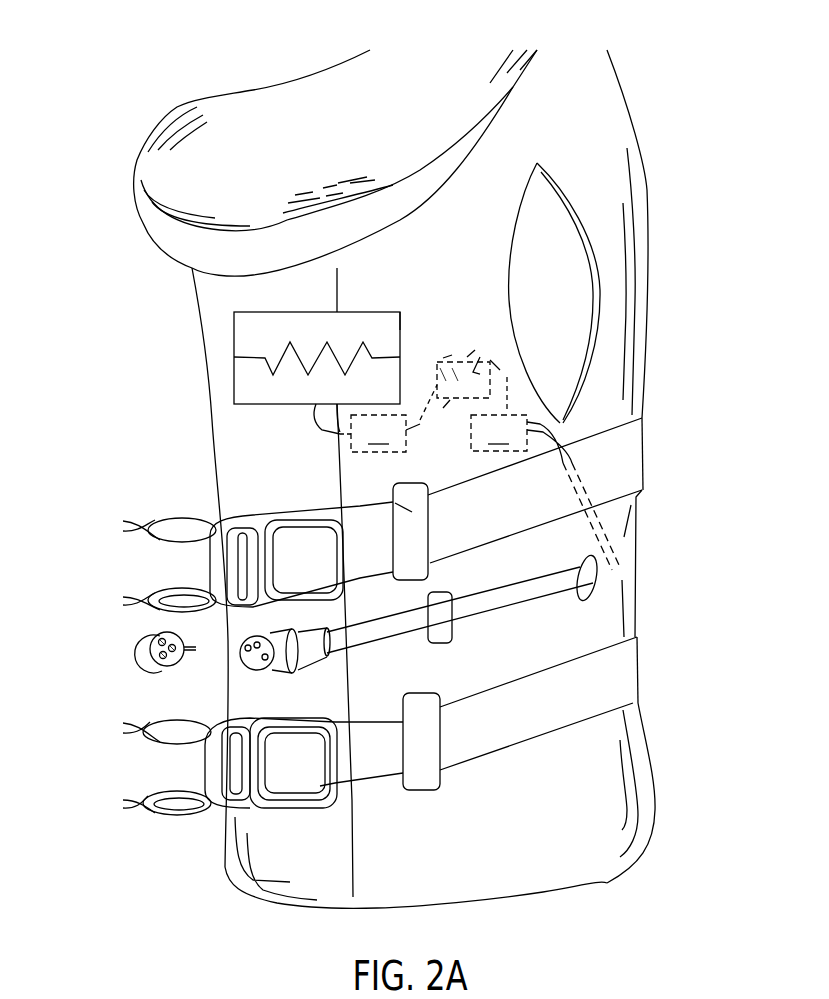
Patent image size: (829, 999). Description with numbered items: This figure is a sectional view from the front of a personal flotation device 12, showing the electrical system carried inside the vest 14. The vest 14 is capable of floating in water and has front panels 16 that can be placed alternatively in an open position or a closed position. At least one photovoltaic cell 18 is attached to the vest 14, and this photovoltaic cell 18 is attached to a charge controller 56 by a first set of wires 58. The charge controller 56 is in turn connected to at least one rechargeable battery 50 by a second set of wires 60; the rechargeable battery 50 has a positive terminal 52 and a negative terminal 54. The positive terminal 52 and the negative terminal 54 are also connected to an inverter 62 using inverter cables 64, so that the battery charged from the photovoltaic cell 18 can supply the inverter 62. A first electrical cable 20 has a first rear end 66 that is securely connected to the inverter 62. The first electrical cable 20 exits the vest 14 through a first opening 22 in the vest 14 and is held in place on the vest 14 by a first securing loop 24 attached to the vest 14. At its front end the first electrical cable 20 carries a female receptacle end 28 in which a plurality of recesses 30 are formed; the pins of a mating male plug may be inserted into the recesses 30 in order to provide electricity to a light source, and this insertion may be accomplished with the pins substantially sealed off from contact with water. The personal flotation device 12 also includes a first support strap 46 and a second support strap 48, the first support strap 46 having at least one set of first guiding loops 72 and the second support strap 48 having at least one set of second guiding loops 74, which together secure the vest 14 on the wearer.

The personal flotation device 12 is at (116, 60).
The vest 14 is at (201, 305).
The front panels 16 is at (225, 357).
The photovoltaic cell 18 is at (400, 333).
The first electrical cable 20 is at (520, 443).
The first opening 22 is at (593, 578).
The first securing loop 24 is at (438, 625).
The female receptacle end 28 is at (265, 670).
The recesses 30 is at (240, 645).
The first support strap 46 is at (643, 473).
The second support strap 48 is at (637, 672).
The rechargeable battery 50 is at (468, 382).
The positive terminal 52 is at (443, 358).
The negative terminal 54 is at (467, 357).
The charge controller 56 is at (378, 433).
The first set of wires 58 is at (337, 436).
The second set of wires 60 is at (500, 403).
The inverter 62 is at (499, 433).
The inverter cables 64 is at (507, 377).
The first rear end 66 is at (545, 423).
The first guiding loops 72 is at (393, 507).
The second guiding loops 74 is at (422, 772).